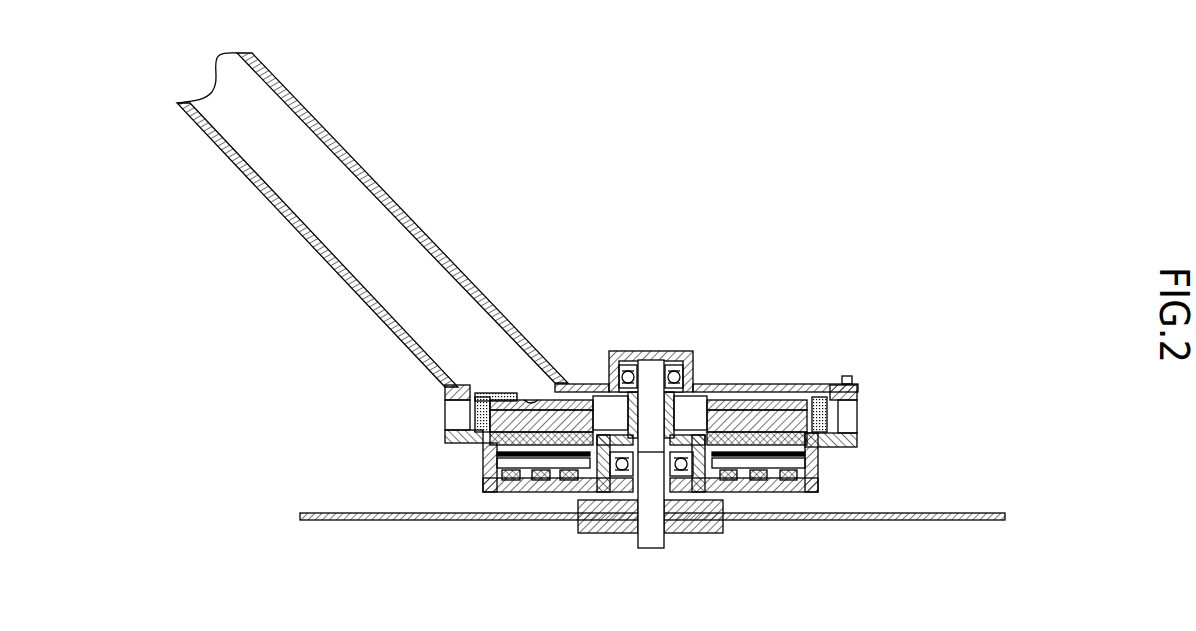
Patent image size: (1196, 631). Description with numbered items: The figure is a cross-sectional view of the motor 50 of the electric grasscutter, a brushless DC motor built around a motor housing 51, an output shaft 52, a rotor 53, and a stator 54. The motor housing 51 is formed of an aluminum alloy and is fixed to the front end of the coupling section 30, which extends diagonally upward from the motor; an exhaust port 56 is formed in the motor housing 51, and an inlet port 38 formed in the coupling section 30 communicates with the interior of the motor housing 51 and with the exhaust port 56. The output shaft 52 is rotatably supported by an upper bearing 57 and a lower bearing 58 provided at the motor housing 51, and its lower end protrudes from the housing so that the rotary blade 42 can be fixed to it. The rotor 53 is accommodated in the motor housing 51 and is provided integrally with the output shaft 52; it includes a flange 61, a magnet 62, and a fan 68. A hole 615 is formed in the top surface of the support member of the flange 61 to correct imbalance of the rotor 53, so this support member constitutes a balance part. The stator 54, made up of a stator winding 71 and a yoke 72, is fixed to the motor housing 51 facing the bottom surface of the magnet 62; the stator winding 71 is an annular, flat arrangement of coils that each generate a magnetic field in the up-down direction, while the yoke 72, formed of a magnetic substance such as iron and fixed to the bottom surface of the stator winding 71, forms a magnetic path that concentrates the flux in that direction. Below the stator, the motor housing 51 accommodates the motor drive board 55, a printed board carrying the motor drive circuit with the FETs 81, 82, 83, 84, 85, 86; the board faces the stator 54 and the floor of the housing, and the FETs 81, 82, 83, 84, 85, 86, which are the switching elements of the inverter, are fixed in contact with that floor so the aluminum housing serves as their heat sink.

The coupling section 30 is at (279, 268).
The inlet port 38 is at (309, 116).
The rotary blade 42 is at (965, 521).
The motor 50 is at (926, 250).
The motor housing 51 is at (450, 440).
The output shaft 52 is at (650, 360).
The rotor 53 is at (902, 312).
The stator 54 is at (902, 460).
The motor drive board 55 is at (810, 492).
The exhaust port 56 is at (455, 414).
The bearing 57 is at (622, 366).
The bearing 58 is at (619, 497).
The flange 61 is at (737, 401).
The magnet 62 is at (760, 411).
The fan 68 is at (818, 397).
The stator winding 71 is at (808, 452).
The yoke 72 is at (808, 470).
The FET 81 is at (512, 492).
The FET 82 is at (540, 492).
The FET 83 is at (568, 492).
The FET 84 is at (735, 492).
The FET 85 is at (765, 492).
The FET 86 is at (796, 492).
The hole 615 is at (534, 394).